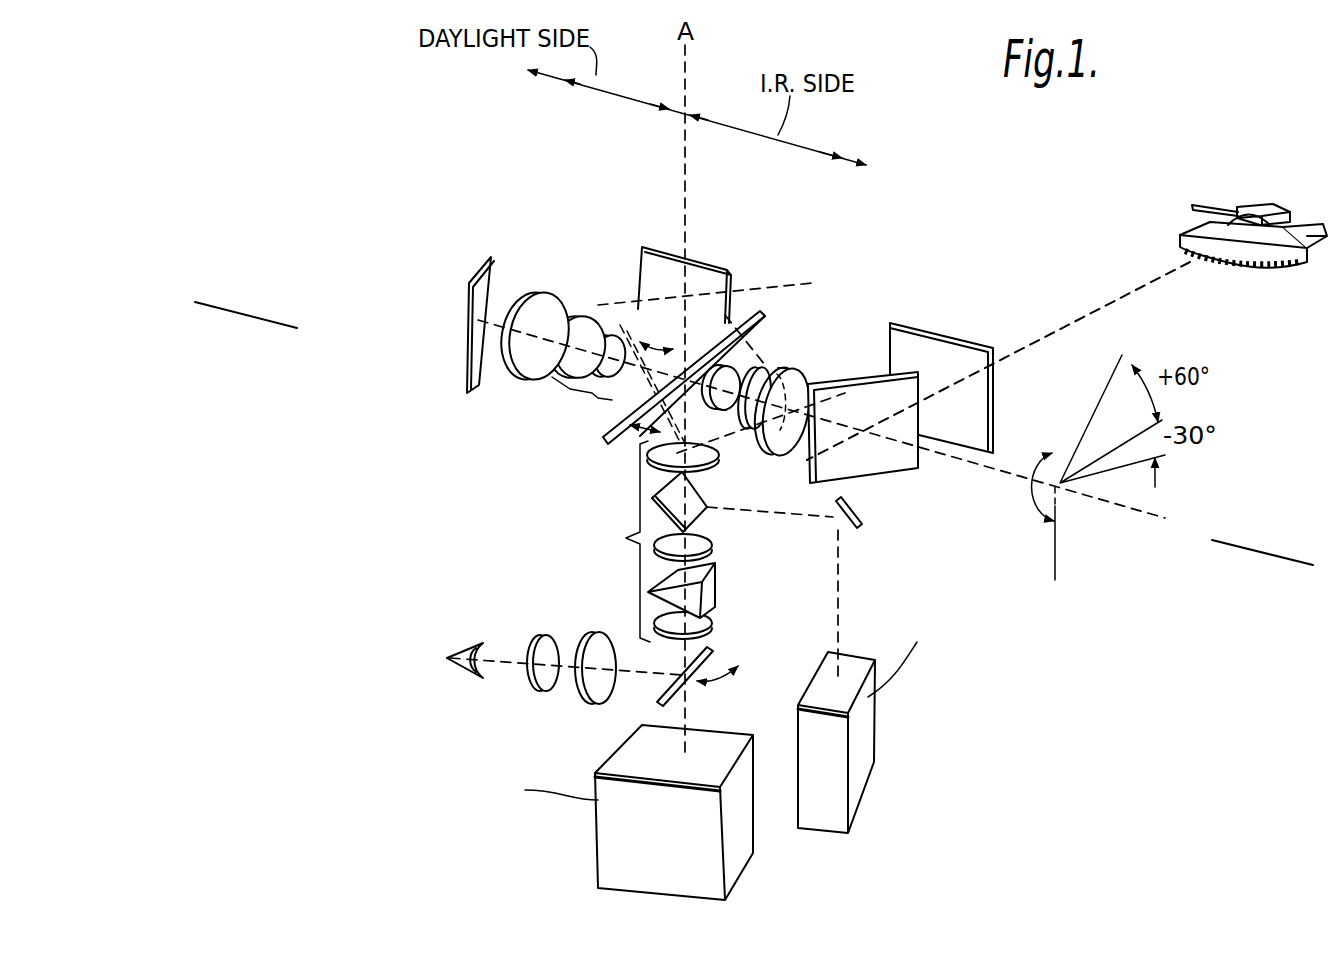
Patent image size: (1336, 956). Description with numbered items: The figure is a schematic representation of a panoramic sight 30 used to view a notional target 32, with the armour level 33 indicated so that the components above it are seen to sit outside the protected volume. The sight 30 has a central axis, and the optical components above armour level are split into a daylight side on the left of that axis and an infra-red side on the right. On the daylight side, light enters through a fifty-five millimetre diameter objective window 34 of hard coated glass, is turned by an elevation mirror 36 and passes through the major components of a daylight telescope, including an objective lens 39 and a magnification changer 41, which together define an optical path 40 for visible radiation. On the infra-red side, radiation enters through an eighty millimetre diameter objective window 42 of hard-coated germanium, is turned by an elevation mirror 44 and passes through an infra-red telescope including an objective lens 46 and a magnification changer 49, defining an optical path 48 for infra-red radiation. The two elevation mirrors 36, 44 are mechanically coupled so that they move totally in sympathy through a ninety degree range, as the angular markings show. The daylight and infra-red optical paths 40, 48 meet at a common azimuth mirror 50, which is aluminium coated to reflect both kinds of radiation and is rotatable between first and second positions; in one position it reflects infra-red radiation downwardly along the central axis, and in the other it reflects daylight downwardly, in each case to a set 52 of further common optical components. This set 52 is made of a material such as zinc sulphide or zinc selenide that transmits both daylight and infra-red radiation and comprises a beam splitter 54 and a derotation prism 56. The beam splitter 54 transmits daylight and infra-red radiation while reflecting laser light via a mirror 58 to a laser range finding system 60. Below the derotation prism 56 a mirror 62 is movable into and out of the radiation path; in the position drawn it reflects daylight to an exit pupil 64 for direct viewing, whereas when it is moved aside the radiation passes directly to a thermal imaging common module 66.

The panoramic sight 30 is at (378, 203).
The notional target 32 is at (1257, 196).
The armour level 33 is at (264, 322).
The objective window 34 is at (689, 268).
The elevation mirror 36 is at (467, 352).
The objective lens 39 is at (539, 292).
The optical path 40 is at (612, 304).
The magnification changer 41 is at (587, 395).
The objective window 42 is at (939, 334).
The elevation mirror 44 is at (893, 466).
The objective lens 46 is at (800, 374).
The optical path 48 is at (1046, 331).
The magnification changer 49 is at (742, 360).
The azimuth mirror 50 is at (605, 435).
The set of further common optical components 52 is at (626, 538).
The beam splitter 54 is at (695, 512).
The derotation prism 56 is at (712, 595).
The mirror 58 is at (860, 523).
The laser range finding system 60 is at (830, 780).
The mirror 62 is at (711, 660).
The exit pupil 64 is at (528, 684).
The thermal imaging common module 66 is at (610, 820).